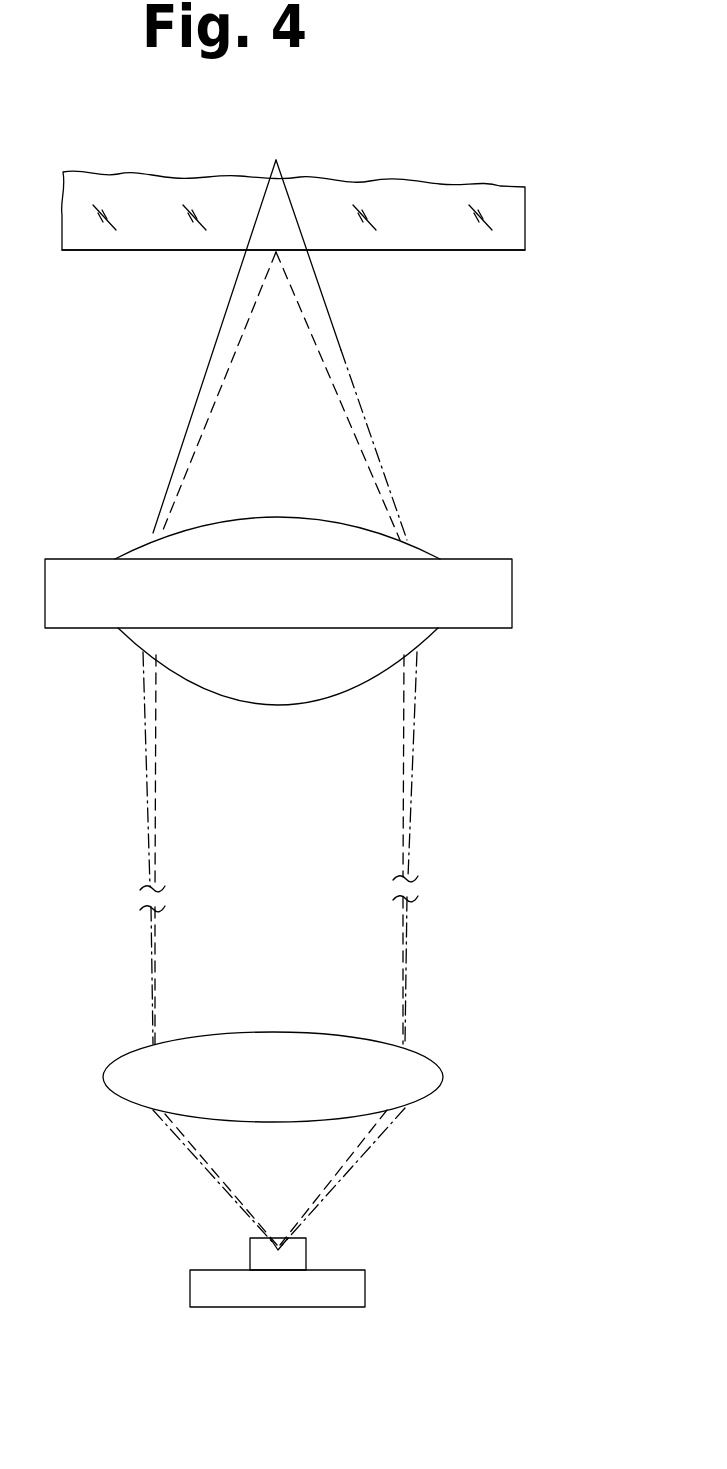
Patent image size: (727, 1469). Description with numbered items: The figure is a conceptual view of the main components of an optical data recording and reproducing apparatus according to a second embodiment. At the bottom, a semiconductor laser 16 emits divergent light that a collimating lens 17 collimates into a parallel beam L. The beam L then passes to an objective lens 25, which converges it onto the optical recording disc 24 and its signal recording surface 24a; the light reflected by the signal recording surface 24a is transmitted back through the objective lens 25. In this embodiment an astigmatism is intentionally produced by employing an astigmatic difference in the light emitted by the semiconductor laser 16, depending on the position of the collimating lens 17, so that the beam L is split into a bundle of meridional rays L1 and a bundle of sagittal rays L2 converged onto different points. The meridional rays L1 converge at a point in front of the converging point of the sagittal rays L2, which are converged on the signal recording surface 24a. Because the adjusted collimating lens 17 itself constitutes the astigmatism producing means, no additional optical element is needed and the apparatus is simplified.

The optical recording disc 24 is at (470, 180).
The signal recording surface 24a is at (498, 253).
The objective lens 25 is at (503, 548).
The collimating lens 17 is at (438, 1060).
The semiconductor laser 16 is at (373, 1275).
The beam L is at (432, 802).
The meridional rays L1 is at (357, 426).
The sagittal rays L2 is at (357, 384).